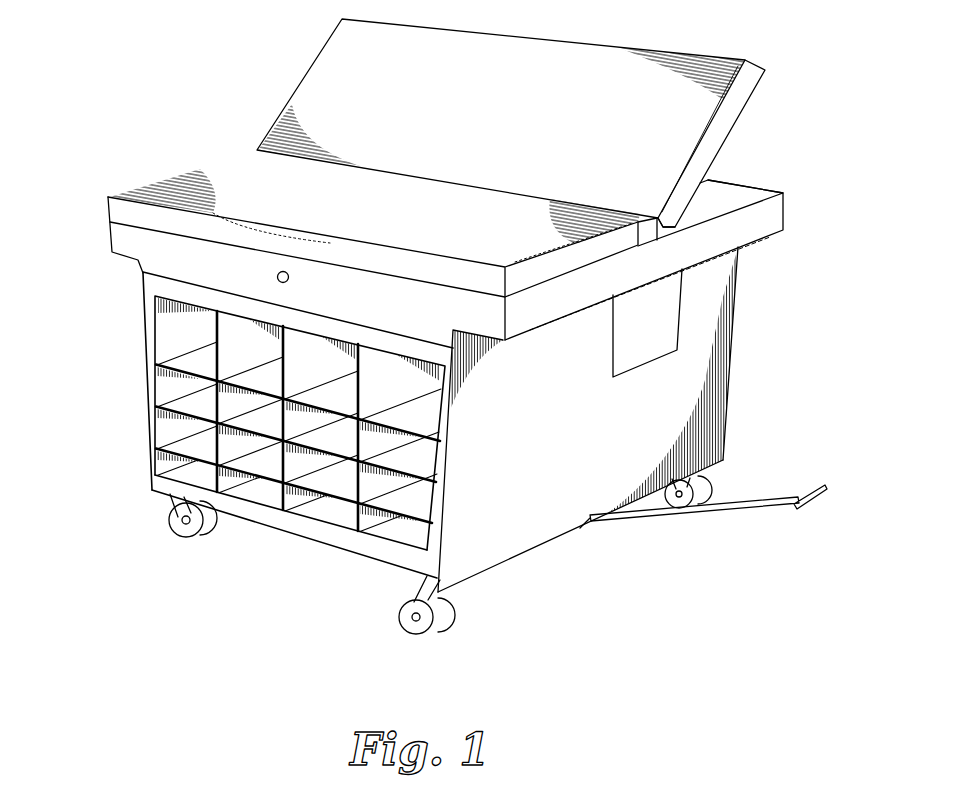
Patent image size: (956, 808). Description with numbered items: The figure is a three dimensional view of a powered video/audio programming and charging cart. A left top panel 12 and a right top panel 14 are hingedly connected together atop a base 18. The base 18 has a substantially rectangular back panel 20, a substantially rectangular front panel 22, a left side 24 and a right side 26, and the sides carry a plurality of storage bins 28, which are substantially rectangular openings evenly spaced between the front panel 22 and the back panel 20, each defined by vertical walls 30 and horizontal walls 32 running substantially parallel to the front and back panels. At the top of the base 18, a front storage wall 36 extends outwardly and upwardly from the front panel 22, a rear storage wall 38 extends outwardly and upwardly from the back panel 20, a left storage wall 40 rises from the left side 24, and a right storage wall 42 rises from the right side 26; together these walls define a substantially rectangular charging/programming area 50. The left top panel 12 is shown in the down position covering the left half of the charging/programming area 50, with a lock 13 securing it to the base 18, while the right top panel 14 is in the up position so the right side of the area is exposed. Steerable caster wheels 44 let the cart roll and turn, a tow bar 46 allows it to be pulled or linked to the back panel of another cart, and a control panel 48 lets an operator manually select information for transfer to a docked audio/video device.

The left top panel 12 is at (353, 218).
The lock 13 is at (290, 280).
The right top panel 14 is at (480, 141).
The base 18 is at (745, 436).
The back panel 20 is at (150, 382).
The front panel 22 is at (528, 548).
The left side 24 is at (122, 425).
The right side 26 is at (737, 300).
The storage bins 28 is at (377, 552).
The vertical walls 30 is at (222, 362).
The horizontal walls 32 is at (282, 381).
The front storage wall 36 is at (757, 223).
The rear storage wall 38 is at (165, 175).
The left storage wall 40 is at (122, 238).
The right storage wall 42 is at (753, 188).
The steerable caster wheels 44 is at (173, 538).
The tow bar 46 is at (813, 497).
The control panel 48 is at (613, 367).
The charging/programming area 50 is at (750, 163).